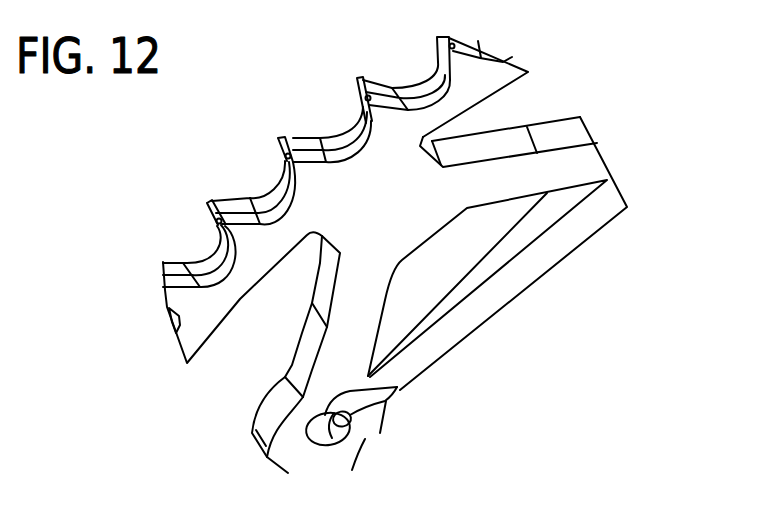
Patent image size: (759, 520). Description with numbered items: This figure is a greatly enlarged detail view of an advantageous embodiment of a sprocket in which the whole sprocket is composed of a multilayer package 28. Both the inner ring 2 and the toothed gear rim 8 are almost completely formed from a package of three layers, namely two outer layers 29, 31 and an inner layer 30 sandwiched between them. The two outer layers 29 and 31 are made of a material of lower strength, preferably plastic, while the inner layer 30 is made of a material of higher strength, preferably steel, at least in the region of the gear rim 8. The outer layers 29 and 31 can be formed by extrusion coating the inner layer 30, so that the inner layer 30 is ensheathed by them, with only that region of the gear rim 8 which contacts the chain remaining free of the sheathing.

The inner ring 2 is at (528, 263).
The gear rim 8 is at (483, 75).
The multilayer package 28 is at (287, 160).
The outer layer 29 is at (333, 133).
The inner layer 30 is at (405, 90).
The outer layer 31 is at (346, 166).